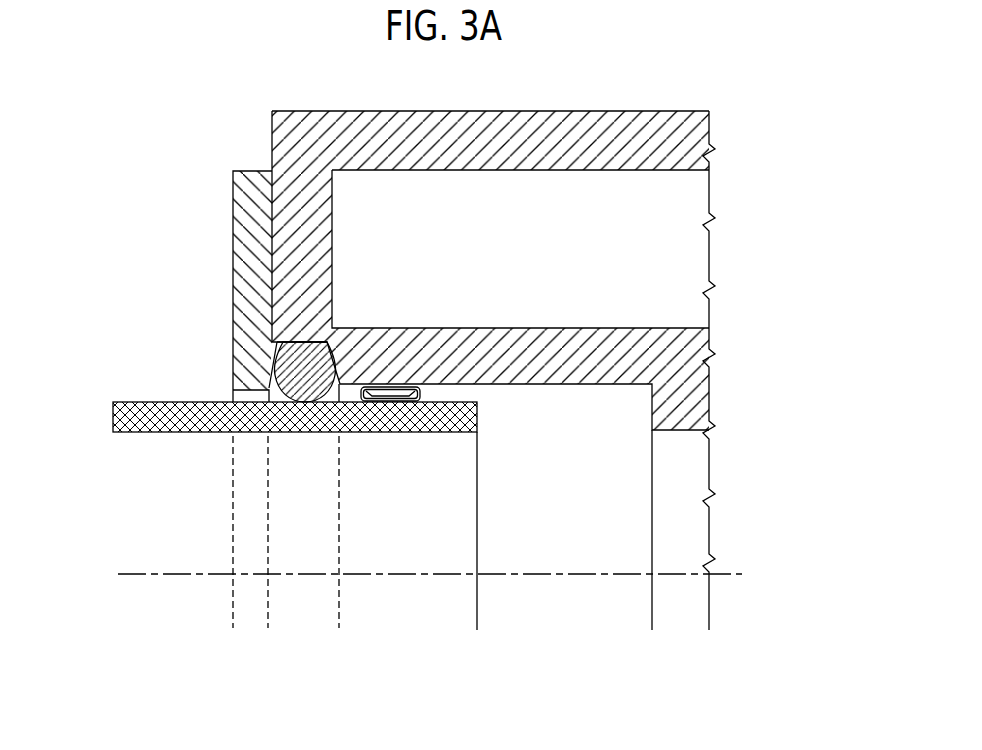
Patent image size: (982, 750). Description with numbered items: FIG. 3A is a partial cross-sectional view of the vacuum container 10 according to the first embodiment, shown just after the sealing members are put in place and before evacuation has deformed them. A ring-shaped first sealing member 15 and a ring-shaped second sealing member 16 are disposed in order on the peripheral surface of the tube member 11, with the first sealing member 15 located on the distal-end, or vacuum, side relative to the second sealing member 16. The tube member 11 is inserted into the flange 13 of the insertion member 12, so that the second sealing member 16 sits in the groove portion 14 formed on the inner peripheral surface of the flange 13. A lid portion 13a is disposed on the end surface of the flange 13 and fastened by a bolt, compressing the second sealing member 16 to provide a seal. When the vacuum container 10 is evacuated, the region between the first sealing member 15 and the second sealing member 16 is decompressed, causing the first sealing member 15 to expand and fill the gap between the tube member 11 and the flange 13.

The vacuum container 10 is at (131, 172).
The tube member 11 is at (142, 401).
The insertion member 12 is at (722, 372).
The flange 13 is at (703, 128).
The lid portion 13a is at (250, 189).
The groove portion 14 is at (325, 346).
The first sealing member 15 is at (421, 393).
The second sealing member 16 is at (290, 368).